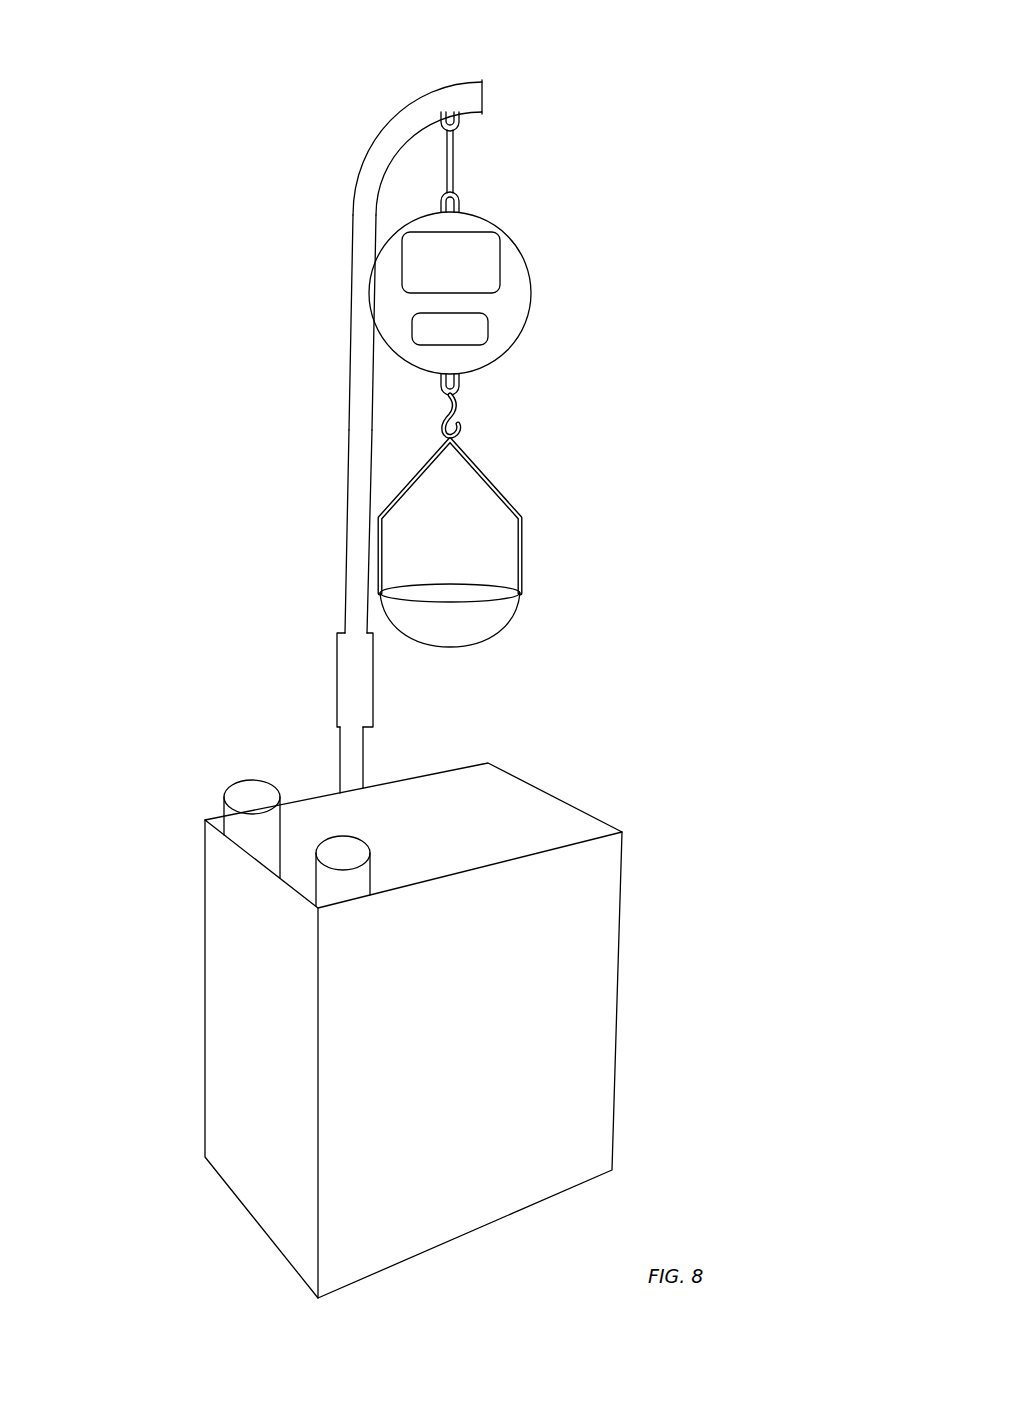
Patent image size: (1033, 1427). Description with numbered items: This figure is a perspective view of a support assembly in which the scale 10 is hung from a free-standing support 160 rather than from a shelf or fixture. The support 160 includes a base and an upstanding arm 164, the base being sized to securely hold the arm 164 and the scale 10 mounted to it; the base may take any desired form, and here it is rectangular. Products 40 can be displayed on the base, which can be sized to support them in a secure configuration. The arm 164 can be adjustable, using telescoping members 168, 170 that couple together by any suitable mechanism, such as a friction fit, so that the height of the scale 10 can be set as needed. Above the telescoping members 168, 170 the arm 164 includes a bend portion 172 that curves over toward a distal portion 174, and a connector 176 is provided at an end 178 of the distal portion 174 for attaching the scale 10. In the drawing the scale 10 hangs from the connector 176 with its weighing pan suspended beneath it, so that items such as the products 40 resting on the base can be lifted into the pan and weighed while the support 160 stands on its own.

The scale 10 is at (532, 300).
The products 40 is at (223, 803).
The free-standing support 160 is at (676, 721).
The upstanding arm 164 is at (348, 390).
The telescoping member 168 is at (337, 732).
The telescoping member 170 is at (343, 520).
The bend portion 172 is at (352, 192).
The distal portion 174 is at (402, 92).
The connector 176 is at (460, 118).
The end 178 is at (482, 97).